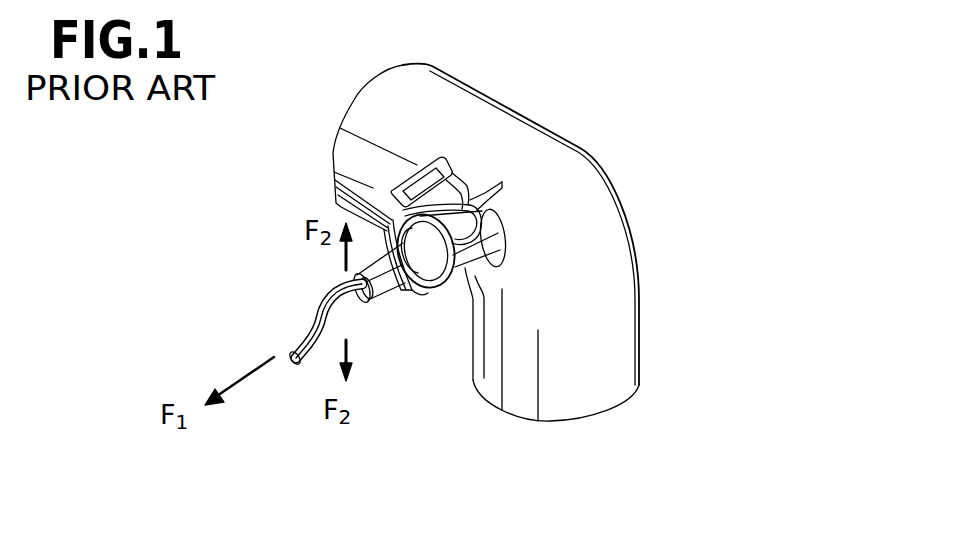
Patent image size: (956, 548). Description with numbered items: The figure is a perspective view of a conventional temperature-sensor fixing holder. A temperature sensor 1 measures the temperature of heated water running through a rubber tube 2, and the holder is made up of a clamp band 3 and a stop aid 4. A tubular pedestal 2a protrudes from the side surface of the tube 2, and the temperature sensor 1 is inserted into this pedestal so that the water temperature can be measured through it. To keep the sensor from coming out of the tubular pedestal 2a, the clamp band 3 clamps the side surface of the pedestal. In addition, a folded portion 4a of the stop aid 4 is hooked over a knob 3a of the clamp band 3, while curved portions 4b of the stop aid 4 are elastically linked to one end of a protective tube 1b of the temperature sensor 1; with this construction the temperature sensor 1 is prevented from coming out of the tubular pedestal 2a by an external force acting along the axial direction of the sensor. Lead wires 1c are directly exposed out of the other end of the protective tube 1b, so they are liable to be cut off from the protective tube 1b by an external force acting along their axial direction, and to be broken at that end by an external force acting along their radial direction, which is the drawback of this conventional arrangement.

The temperature sensor 1 is at (375, 304).
The protective tube 1b is at (355, 273).
The lead wires 1c is at (289, 352).
The rubber tube 2 is at (577, 148).
The tubular pedestal 2a is at (513, 213).
The clamp band 3 is at (480, 277).
The knob 3a is at (417, 177).
The stop aid 4 is at (384, 203).
The folded portion 4a is at (463, 183).
The curved portions 4b is at (427, 293).